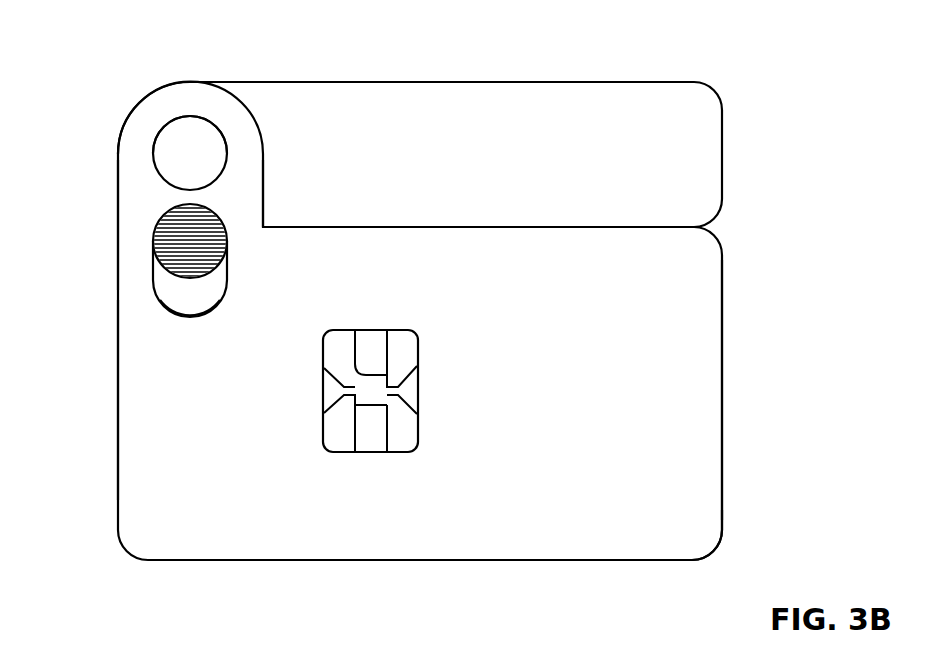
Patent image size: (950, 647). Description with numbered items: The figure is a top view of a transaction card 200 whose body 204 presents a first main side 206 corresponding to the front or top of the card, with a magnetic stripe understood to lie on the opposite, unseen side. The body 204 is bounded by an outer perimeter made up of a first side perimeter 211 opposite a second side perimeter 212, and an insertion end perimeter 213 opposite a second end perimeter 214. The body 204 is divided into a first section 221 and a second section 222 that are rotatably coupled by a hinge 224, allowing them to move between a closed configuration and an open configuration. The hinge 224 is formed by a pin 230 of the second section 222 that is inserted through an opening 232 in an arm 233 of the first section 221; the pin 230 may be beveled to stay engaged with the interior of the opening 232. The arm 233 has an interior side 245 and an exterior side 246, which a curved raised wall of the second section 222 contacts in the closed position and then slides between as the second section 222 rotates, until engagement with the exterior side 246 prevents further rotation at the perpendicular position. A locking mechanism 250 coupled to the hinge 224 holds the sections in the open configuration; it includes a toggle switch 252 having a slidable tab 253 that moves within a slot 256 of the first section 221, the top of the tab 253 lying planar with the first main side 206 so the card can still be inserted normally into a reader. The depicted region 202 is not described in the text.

The transaction card 200 is at (818, 58).
The integrated circuit chip 202 is at (400, 337).
The body 204 is at (742, 392).
The first main side 206 is at (710, 515).
The first side perimeter 211 is at (117, 375).
The second side perimeter 212 is at (722, 325).
The insertion end perimeter 213 is at (587, 560).
The second end perimeter 214 is at (438, 82).
The first section 221 is at (244, 550).
The second section 222 is at (661, 99).
The hinge 224 is at (134, 145).
The pin 230 is at (197, 137).
The opening 232 is at (177, 117).
The arm 233 is at (140, 120).
The interior side 245 is at (265, 170).
The exterior side 246 is at (117, 192).
The locking mechanism 250 is at (134, 234).
The toggle switch 252 is at (186, 268).
The slidable tab 253 is at (173, 248).
The slot 256 is at (195, 303).